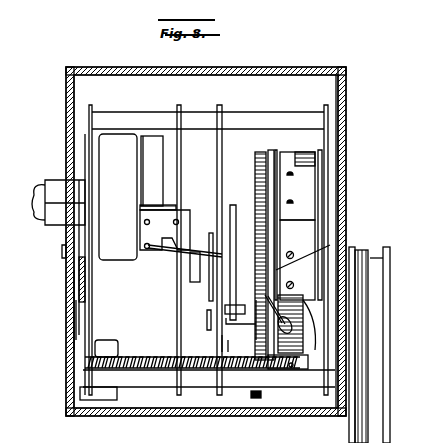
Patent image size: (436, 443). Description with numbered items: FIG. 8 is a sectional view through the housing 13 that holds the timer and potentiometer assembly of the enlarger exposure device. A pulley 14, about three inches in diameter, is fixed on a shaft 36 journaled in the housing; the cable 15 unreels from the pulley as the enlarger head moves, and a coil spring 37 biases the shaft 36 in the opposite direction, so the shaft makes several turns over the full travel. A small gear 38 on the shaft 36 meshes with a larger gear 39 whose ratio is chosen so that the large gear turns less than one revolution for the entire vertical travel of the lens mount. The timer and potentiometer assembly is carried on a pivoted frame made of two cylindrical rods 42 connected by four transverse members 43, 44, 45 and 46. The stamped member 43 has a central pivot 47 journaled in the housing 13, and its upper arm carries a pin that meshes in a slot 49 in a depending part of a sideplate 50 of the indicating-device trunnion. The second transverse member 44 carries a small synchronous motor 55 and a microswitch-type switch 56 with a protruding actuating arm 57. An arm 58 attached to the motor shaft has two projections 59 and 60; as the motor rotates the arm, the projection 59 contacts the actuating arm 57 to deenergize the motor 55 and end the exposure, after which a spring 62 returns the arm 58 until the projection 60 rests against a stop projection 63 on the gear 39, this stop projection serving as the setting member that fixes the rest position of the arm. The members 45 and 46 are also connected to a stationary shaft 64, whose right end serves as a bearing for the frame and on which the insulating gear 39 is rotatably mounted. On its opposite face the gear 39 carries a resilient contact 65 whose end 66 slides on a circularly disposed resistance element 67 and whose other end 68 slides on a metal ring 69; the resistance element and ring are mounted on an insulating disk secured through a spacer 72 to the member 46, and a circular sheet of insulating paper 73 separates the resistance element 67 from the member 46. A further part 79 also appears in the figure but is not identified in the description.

The housing 13 is at (93, 66).
The pulley 14 is at (342, 215).
The cable 15 is at (358, 420).
The shaft 36 is at (290, 330).
The coil spring 37 is at (157, 348).
The gear 38 is at (245, 388).
The large gear 39 is at (265, 148).
The cylindrical rods 42 is at (118, 117).
The transverse member 43 is at (72, 152).
The second transverse member 44 is at (178, 308).
The transverse member 45 is at (225, 135).
The transverse member 46 is at (328, 122).
The pivot 47 is at (62, 249).
The slot 49 is at (76, 287).
The sideplate 50 is at (79, 271).
The synchronous motor 55 is at (118, 250).
The switch 56 is at (188, 208).
The actuating arm 57 is at (222, 230).
The arm 58 is at (209, 292).
The projection 59 is at (207, 324).
The projection 60 is at (237, 305).
The spring 62 is at (190, 268).
The stop projection 63 is at (280, 326).
The stationary shaft 64 is at (318, 278).
The resilient contact 65 is at (278, 160).
The contact end 66 is at (256, 180).
The resistance element 67 is at (305, 150).
The contact end 68 is at (222, 348).
The metal ring 69 is at (308, 345).
The spacer 72 is at (282, 272).
The insulating paper sheet 73 is at (340, 150).
The cam 79 is at (2, 420).